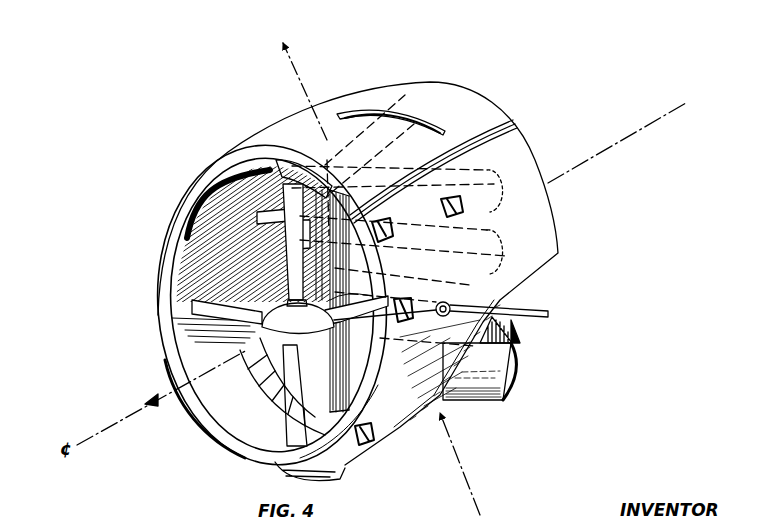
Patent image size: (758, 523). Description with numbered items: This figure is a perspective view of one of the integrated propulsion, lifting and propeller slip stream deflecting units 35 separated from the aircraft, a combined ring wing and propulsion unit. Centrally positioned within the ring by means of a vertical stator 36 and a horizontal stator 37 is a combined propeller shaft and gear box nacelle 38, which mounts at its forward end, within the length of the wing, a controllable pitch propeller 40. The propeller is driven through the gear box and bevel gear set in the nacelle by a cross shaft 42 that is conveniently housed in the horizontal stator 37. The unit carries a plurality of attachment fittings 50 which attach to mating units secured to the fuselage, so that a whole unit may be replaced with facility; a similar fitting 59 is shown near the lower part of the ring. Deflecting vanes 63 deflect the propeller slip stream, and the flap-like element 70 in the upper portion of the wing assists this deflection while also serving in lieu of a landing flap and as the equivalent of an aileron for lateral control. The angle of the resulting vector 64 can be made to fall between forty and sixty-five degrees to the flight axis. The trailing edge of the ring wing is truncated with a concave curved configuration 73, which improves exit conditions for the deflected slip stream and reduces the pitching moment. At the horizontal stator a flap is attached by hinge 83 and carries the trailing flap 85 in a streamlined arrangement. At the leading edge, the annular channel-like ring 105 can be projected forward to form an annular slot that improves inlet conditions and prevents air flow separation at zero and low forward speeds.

The unit 35 is at (263, 131).
The vertical stator 36 is at (348, 361).
The horizontal stator 37 is at (268, 305).
The combined propeller shaft and gear box nacelle 38 is at (302, 304).
The controllable pitch propeller 40 is at (274, 351).
The cross shaft 42 is at (521, 307).
The attachment fittings 50 is at (424, 211).
The actuator 59 is at (372, 433).
The deflecting vanes 63 is at (504, 238).
The vector 64 is at (303, 81).
The flap-like element 70 is at (457, 106).
The concave curved configuration 73 is at (467, 354).
The hinge 83 is at (521, 331).
The trailing flap 85 is at (512, 380).
The annular channel-like ring 105 is at (212, 185).